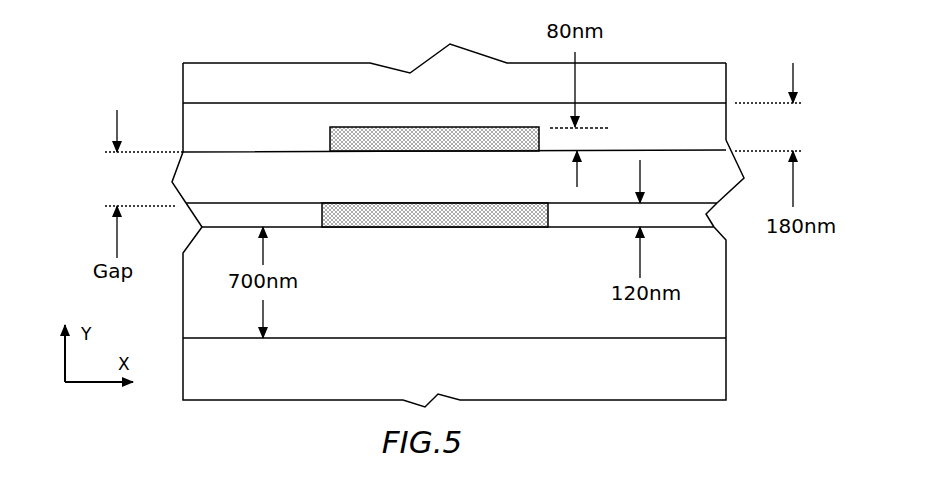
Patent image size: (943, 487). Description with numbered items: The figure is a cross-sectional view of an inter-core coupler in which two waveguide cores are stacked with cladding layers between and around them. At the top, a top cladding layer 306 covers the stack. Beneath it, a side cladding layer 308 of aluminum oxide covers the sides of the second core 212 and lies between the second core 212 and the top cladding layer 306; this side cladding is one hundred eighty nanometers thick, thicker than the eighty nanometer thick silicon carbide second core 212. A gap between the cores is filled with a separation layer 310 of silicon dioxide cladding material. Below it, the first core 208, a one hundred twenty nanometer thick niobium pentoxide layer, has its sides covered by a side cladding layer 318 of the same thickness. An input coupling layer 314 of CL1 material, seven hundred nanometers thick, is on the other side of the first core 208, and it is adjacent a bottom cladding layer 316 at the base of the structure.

The top cladding layer 306 is at (428, 91).
The side cladding layer 308 is at (259, 136).
The second core 212 is at (405, 150).
The separation layer 310 is at (405, 188).
The side cladding layer 318 is at (246, 223).
The first core 208 is at (403, 223).
The input coupling layer 314 is at (406, 295).
The bottom cladding layer 316 is at (406, 376).